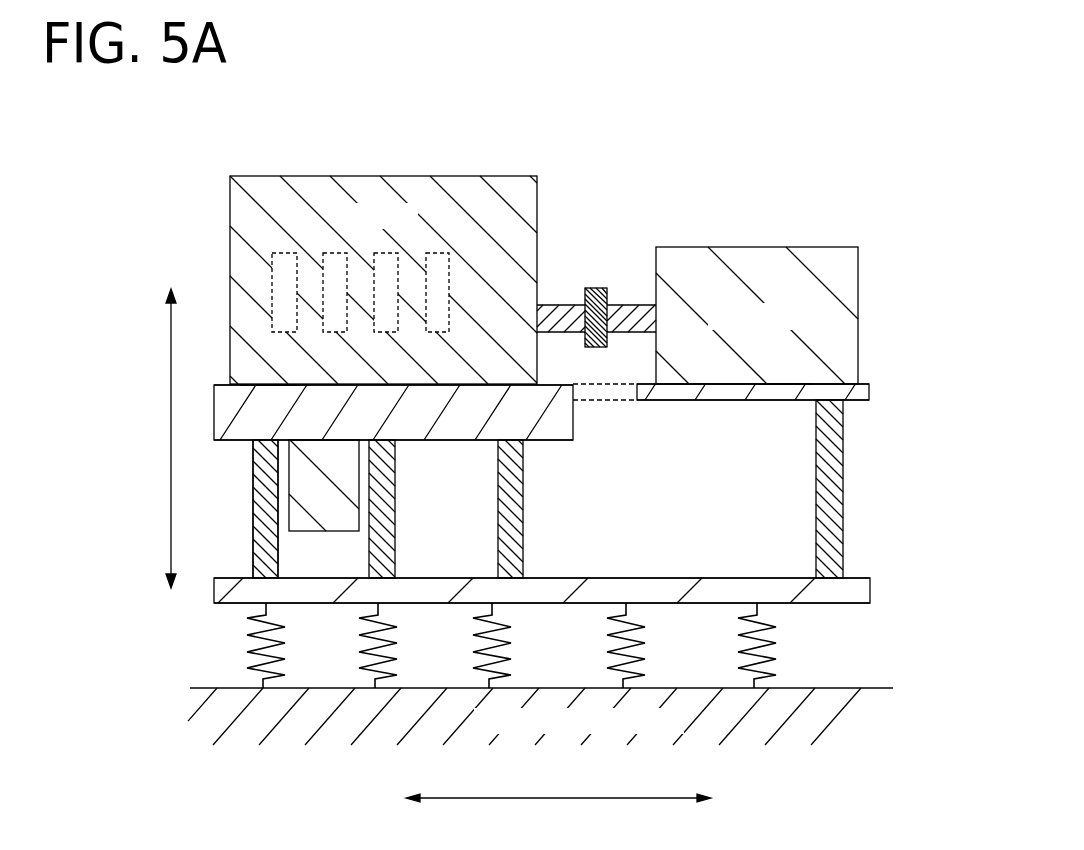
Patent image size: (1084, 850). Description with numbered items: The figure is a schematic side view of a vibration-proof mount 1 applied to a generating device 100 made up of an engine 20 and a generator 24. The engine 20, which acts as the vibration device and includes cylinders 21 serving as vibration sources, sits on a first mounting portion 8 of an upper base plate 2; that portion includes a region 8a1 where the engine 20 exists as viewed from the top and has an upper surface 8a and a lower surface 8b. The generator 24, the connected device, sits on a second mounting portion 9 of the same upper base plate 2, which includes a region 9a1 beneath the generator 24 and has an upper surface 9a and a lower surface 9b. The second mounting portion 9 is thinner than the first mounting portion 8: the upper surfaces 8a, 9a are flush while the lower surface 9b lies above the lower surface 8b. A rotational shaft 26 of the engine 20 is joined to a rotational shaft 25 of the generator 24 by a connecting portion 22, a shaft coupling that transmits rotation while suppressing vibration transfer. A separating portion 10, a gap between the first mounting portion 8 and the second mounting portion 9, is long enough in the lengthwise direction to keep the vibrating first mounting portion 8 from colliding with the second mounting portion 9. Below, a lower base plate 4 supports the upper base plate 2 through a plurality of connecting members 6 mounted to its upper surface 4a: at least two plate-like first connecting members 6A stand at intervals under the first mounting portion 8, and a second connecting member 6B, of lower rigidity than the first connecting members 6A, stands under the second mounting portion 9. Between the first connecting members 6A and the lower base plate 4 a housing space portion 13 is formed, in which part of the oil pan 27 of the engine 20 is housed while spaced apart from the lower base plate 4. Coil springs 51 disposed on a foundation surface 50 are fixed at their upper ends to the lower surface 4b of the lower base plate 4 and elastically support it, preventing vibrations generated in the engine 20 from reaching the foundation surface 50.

The generating device 100 is at (855, 147).
The vibration-proof mount 1 is at (897, 390).
The upper base plate 2 is at (650, 507).
The lower base plate 4 is at (870, 592).
The upper surface 4a is at (744, 578).
The lower surface 4b is at (868, 603).
The connecting members 6 is at (603, 489).
The first connecting members 6A is at (397, 507).
The second connecting member 6B is at (843, 515).
The first mounting portion 8 is at (557, 441).
The upper surface 8a is at (225, 384).
The region 8a1 is at (270, 386).
The lower surface 8b is at (541, 441).
The second mounting portion 9 is at (650, 400).
The upper surface 9a is at (865, 383).
The region 9a1 is at (787, 387).
The lower surface 9b is at (678, 400).
The separating portion 10 is at (600, 400).
The housing space portion 13 is at (333, 563).
The engine 20 is at (460, 176).
The cylinders 21 is at (272, 278).
The connecting portion 22 is at (601, 288).
The generator 24 is at (798, 247).
The rotational shaft 25 is at (640, 305).
The rotational shaft 26 is at (564, 305).
The oil pan 27 is at (289, 513).
The foundation surface 50 is at (888, 688).
The coil springs 51 is at (773, 635).